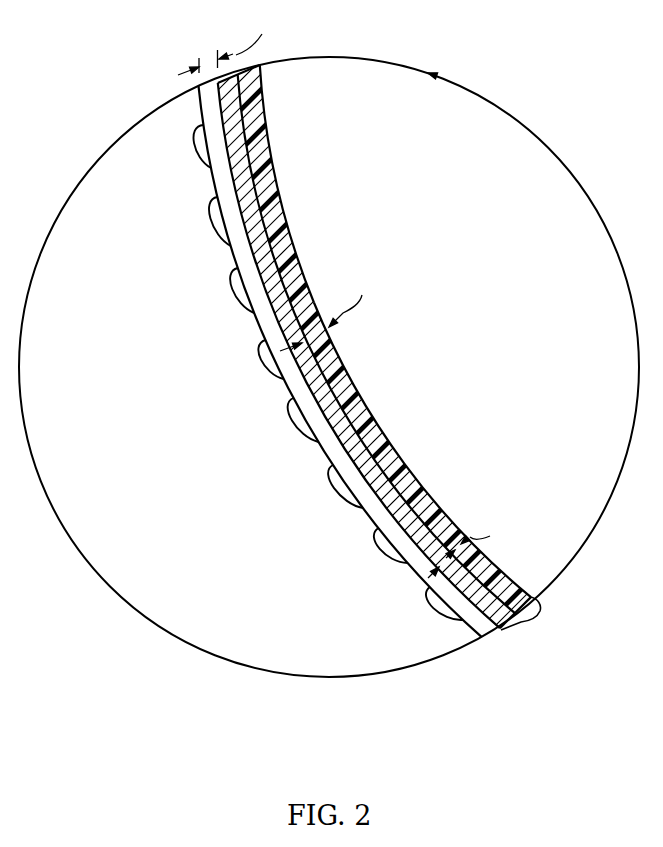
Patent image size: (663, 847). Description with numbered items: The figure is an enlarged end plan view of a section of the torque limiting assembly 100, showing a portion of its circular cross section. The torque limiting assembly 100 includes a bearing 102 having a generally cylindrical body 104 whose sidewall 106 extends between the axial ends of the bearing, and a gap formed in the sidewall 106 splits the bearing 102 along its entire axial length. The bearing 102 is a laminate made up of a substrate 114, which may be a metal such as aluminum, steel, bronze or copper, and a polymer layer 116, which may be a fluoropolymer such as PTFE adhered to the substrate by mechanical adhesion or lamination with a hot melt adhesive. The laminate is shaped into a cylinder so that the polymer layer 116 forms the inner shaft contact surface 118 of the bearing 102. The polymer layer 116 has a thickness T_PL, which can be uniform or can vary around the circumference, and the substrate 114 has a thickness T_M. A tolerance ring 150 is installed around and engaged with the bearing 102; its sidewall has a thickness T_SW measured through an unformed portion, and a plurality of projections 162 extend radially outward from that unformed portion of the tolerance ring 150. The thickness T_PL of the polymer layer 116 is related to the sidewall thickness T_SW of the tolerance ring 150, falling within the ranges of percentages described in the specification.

The torque limiting assembly 100 is at (469, 233).
The bearing 102 is at (524, 619).
The body 104 is at (277, 232).
The sidewall 106 is at (265, 120).
The substrate 114 is at (377, 518).
The polymer layer 116 is at (428, 509).
The inner shaft contact surface 118 is at (382, 430).
The tolerance ring 150 is at (418, 575).
The projections 162 is at (331, 493).